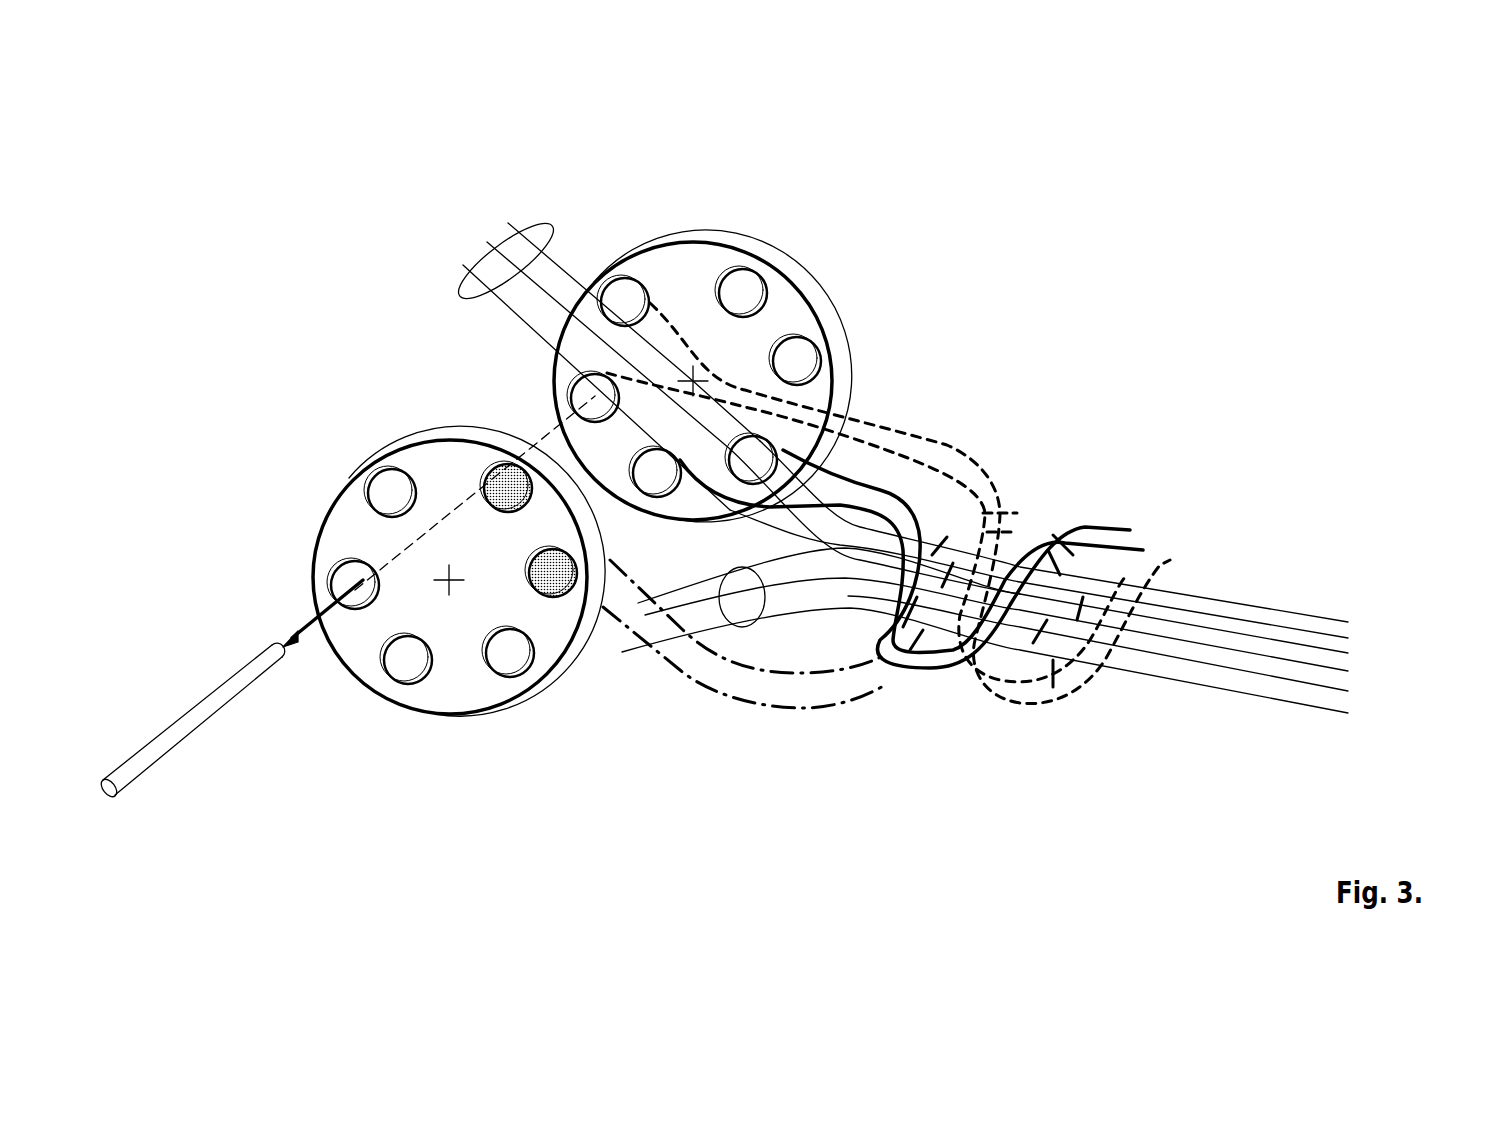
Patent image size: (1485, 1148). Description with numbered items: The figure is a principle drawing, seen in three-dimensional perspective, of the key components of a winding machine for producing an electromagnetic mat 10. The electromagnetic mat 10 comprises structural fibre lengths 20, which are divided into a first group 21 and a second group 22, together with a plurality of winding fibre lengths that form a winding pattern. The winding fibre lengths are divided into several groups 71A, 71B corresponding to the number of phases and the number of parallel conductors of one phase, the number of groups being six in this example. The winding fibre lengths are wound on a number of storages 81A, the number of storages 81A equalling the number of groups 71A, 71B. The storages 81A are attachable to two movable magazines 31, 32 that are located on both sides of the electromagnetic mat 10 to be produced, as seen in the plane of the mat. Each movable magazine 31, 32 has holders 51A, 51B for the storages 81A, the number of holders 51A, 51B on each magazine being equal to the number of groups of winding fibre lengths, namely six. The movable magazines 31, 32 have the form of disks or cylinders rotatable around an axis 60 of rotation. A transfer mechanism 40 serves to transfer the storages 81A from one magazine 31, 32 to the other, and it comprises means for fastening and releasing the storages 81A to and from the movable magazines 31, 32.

The electromagnetic mat 10 is at (1124, 499).
The structural fibre lengths 20 is at (1370, 667).
The first group 21 is at (760, 625).
The second group 22 is at (478, 272).
The movable magazine 31 is at (740, 233).
The movable magazine 32 is at (451, 428).
The transfer mechanism 40 is at (237, 681).
The holders 51A is at (745, 278).
The holders 51B is at (497, 687).
The axis of rotation 60 is at (443, 577).
The group of winding fibre lengths 71A is at (943, 448).
The group of winding fibre lengths 71B is at (1043, 717).
The storage 81A is at (575, 332).